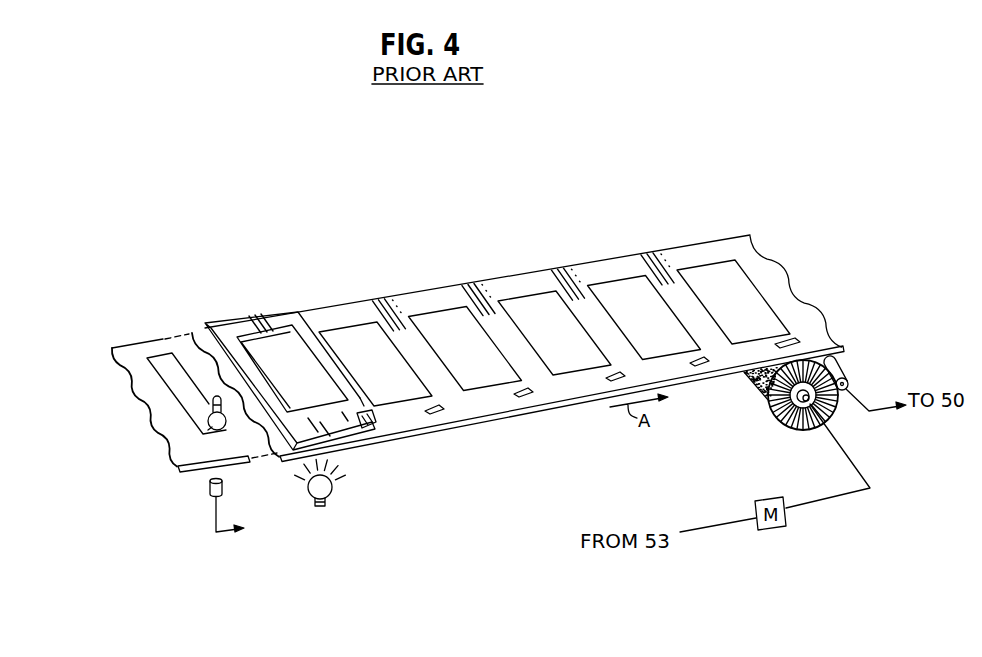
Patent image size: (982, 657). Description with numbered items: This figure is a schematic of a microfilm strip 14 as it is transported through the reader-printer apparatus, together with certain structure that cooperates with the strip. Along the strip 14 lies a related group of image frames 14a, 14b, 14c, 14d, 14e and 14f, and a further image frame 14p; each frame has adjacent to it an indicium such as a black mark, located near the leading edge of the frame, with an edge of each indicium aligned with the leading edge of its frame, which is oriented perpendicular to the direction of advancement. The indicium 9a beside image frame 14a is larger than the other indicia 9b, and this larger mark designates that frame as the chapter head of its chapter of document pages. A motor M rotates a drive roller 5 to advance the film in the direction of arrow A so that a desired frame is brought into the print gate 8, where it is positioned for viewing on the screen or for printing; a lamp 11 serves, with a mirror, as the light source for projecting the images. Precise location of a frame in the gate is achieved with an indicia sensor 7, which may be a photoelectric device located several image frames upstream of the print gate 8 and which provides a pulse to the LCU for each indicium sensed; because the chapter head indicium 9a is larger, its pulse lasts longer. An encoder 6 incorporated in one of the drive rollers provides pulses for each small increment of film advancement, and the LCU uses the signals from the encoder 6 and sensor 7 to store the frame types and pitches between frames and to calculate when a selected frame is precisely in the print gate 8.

The microfilm strip 14 is at (117, 347).
The image frame 14p is at (155, 358).
The print gate 8 is at (283, 310).
The image frame 14f is at (252, 343).
The image frame 14e is at (350, 330).
The image frame 14d is at (442, 317).
The image frame 14c is at (532, 300).
The image frame 14b is at (617, 283).
The image frame 14a is at (703, 262).
The chapter head indicium 9a is at (843, 334).
The indicium 9b is at (428, 412).
The drive roller 5 is at (784, 426).
The encoder 6 is at (831, 402).
The indicia sensor 7 is at (224, 486).
The lamp 11 is at (329, 491).